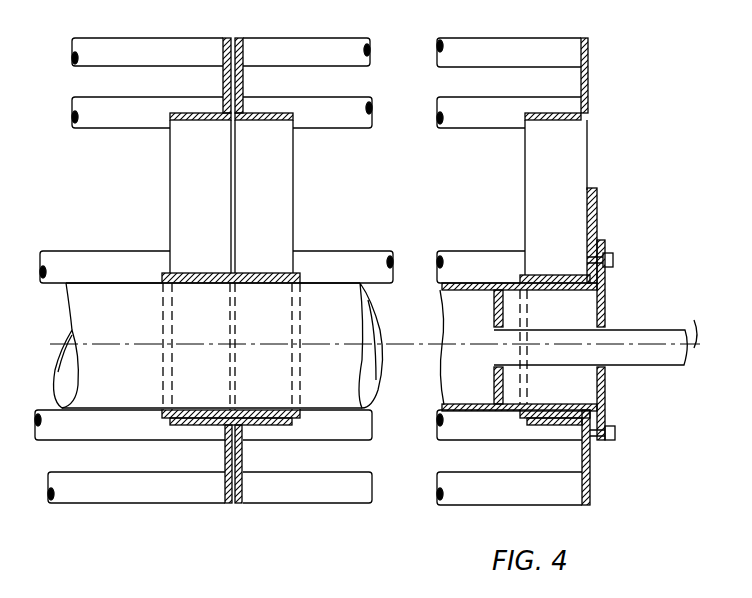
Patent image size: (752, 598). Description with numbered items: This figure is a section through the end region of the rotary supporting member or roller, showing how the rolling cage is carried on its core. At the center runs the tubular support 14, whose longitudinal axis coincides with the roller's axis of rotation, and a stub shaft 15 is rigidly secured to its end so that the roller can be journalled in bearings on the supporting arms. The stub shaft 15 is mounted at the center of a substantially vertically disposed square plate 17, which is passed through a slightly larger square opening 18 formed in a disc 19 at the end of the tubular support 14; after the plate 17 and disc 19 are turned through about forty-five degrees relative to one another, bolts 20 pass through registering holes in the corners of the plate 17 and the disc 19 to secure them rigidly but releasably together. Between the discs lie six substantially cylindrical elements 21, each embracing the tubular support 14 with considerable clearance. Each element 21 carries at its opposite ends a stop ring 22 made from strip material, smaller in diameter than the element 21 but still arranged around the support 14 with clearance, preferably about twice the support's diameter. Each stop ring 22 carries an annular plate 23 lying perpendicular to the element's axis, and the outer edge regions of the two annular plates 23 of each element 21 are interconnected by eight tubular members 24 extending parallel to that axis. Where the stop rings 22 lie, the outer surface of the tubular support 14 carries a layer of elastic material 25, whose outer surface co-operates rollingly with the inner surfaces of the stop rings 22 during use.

The tubular support 14 is at (372, 308).
The stub shaft 15 is at (656, 325).
The square plate 17 is at (608, 250).
The square opening 18 is at (605, 275).
The disc 19 is at (593, 204).
The bolt 20 is at (614, 261).
The cylindrical element 21 is at (128, 14).
The stop ring 22 is at (170, 158).
The annular plate 23 is at (586, 81).
The tubular member 24 is at (373, 103).
The layer of elastic material 25 is at (200, 272).